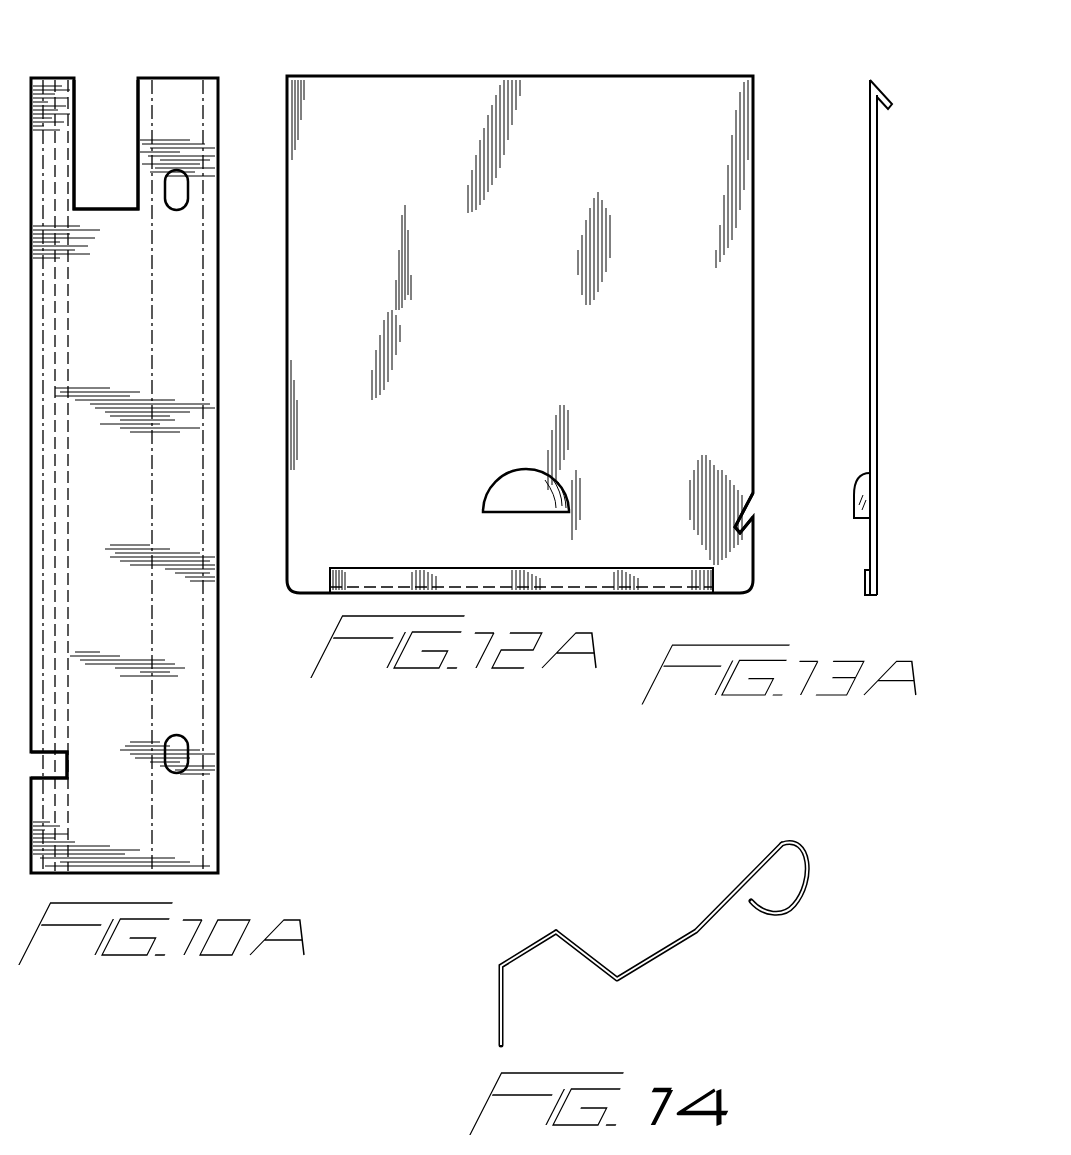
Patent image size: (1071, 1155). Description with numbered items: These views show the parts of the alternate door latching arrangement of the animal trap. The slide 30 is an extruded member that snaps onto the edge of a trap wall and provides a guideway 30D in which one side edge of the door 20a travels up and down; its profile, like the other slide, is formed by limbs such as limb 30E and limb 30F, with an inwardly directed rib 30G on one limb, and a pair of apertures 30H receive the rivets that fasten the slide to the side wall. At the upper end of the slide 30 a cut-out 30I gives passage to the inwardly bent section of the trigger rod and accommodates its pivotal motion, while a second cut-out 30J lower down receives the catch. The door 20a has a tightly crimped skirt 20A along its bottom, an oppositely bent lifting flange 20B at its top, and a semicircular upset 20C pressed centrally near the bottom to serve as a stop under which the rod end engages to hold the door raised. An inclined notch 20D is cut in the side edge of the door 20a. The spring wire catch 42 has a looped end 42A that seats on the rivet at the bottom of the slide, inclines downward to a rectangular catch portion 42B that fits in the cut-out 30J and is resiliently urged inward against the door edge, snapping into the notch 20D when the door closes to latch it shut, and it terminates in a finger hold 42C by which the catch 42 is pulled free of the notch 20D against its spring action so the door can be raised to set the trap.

In FIG. 10A, the slide 30 is at (225, 640).
In FIG. 10A, the guideway 30D is at (44, 314).
In FIG. 10A, the limb 30E is at (37, 522).
In FIG. 10A, the limb 30F is at (63, 580).
In FIG. 10A, the rib 30G is at (205, 549).
In FIG. 10A, the apertures 30H is at (186, 193).
In FIG. 10A, the cut-out 30I is at (101, 119).
In FIG. 10A, the second cut-out 30J is at (50, 763).
In FIG. 12A, the door 20a is at (733, 256).
In FIG. 13A, the door 20a is at (864, 317).
In FIG. 12A, the skirt 20A is at (650, 580).
In FIG. 13A, the skirt 20A is at (862, 590).
In FIG. 13A, the lifting flange 20B is at (882, 94).
In FIG. 12A, the semicircular upset 20C is at (515, 513).
In FIG. 13A, the semicircular upset 20C is at (857, 490).
In FIG. 12A, the inclined notch 20D is at (790, 510).
In FIG. 14, the spring wire catch 42 is at (636, 908).
In FIG. 14, the looped end 42A is at (783, 843).
In FIG. 14, the rectangular catch portion 42B is at (578, 957).
In FIG. 14, the finger hold 42C is at (498, 1012).